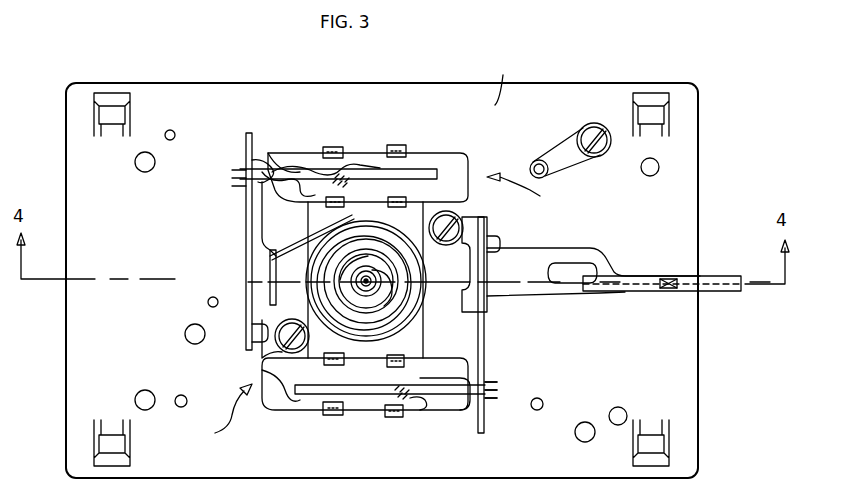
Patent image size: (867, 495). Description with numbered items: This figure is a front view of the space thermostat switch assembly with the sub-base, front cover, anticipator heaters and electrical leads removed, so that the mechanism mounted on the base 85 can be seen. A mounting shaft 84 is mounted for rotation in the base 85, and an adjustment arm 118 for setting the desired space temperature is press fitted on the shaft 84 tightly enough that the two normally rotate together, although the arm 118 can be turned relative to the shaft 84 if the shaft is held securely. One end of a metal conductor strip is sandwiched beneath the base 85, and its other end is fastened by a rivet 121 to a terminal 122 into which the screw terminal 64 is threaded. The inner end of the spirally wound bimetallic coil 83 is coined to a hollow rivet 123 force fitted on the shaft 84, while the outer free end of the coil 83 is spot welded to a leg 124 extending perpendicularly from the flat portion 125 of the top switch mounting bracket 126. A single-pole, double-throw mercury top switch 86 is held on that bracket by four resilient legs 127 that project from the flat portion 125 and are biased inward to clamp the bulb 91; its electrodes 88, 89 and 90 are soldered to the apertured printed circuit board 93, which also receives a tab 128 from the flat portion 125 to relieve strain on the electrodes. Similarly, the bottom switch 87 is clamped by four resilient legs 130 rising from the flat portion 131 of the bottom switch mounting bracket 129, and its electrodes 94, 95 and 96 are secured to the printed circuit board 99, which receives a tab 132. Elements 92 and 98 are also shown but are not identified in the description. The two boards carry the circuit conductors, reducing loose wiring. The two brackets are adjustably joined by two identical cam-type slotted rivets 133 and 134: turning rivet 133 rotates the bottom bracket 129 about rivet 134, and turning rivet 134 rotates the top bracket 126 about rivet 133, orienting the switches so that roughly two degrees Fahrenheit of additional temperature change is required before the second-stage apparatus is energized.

The screw terminal 64 is at (608, 128).
The spirally wound bimetallic coil 83 is at (420, 330).
The mounting shaft 84 is at (487, 272).
The base 85 is at (501, 79).
The top switch 86 is at (527, 190).
The bottom switch 87 is at (218, 415).
The electrode 88 is at (248, 186).
The electrode 89 is at (252, 165).
The electrode 90 is at (290, 168).
The bulb 91 is at (450, 153).
The spring end 92 is at (335, 178).
The printed circuit board 93 is at (247, 135).
The electrode 94 is at (440, 404).
The electrode 95 is at (290, 392).
The electrode 96 is at (360, 392).
The lower spring end 98 is at (425, 398).
The printed circuit board 99 is at (485, 416).
The adjustment arm 118 is at (722, 291).
The rivet 121 is at (532, 163).
The terminal 122 is at (562, 172).
The hollow rivet 123 is at (412, 286).
The leg 124 is at (270, 276).
The flat portion 125 is at (272, 260).
The top switch mounting bracket 126 is at (262, 230).
The resilient legs 127 is at (340, 147).
The tab 128 is at (252, 334).
The bottom switch mounting bracket 129 is at (495, 388).
The resilient legs 130 is at (325, 402).
The flat portion 131 is at (395, 296).
The tab 132 is at (500, 244).
The cam-type slotted rivet 133 is at (275, 358).
The cam-type slotted rivet 134 is at (463, 222).